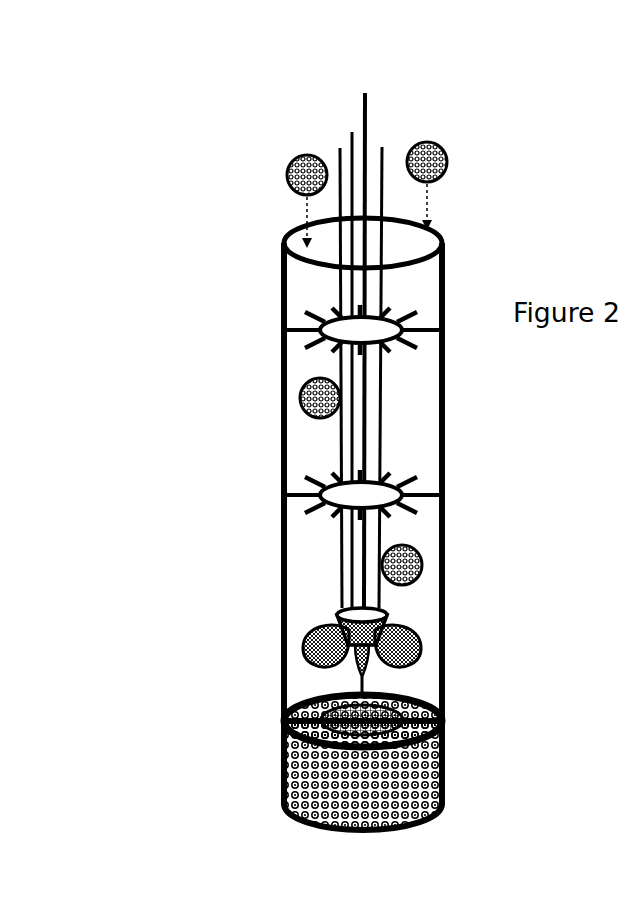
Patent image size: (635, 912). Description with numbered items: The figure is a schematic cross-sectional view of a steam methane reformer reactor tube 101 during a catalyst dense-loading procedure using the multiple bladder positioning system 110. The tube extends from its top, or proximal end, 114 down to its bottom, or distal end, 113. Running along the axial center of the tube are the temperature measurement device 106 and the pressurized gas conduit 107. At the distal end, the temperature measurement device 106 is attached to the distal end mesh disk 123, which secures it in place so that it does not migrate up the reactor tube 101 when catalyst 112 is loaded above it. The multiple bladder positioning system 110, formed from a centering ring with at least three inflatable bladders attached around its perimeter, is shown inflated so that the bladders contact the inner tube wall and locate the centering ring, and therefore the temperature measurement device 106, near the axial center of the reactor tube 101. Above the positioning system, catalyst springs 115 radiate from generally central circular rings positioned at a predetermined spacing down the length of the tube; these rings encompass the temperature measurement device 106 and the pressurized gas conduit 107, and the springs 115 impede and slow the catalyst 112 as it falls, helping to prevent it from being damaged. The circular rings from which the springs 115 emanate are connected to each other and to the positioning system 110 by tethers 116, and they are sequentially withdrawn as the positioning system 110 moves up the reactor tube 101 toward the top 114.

The reactor tube 101 is at (448, 612).
The temperature measurement device 106 is at (358, 107).
The pressurized gas conduit 107 is at (347, 124).
The multiple bladder positioning system 110 is at (318, 618).
The catalyst 112 is at (297, 390).
The bottom of the reactor tube 113 is at (278, 812).
The top of the reactor tube 114 is at (267, 236).
The catalyst springs 115 is at (300, 484).
The centering ring and catalyst springs tether 116 is at (335, 202).
The distal end mesh disk 123 is at (428, 746).